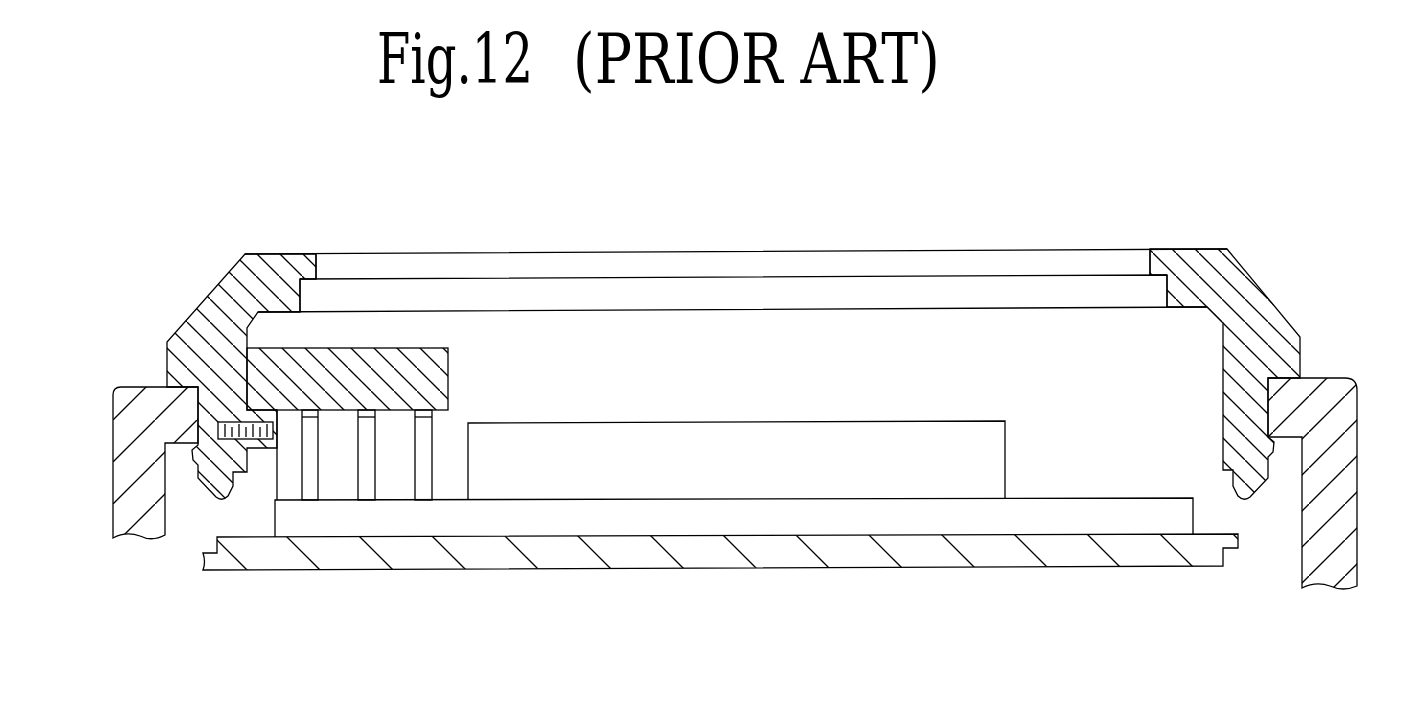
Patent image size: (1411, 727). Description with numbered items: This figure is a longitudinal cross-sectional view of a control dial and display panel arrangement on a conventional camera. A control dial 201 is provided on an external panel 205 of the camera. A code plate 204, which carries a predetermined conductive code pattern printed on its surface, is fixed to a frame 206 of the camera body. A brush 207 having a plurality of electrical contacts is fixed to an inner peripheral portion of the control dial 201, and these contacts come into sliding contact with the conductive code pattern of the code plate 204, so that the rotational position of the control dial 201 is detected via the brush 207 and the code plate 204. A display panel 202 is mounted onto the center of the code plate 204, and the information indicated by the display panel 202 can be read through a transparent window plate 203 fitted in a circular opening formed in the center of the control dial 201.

The control dial 201 is at (207, 333).
The display panel 202 is at (692, 437).
The transparent window plate 203 is at (922, 265).
The code plate 204 is at (1083, 497).
The external panel 205 is at (1327, 400).
The frame 206 is at (490, 560).
The brush 207 is at (427, 458).